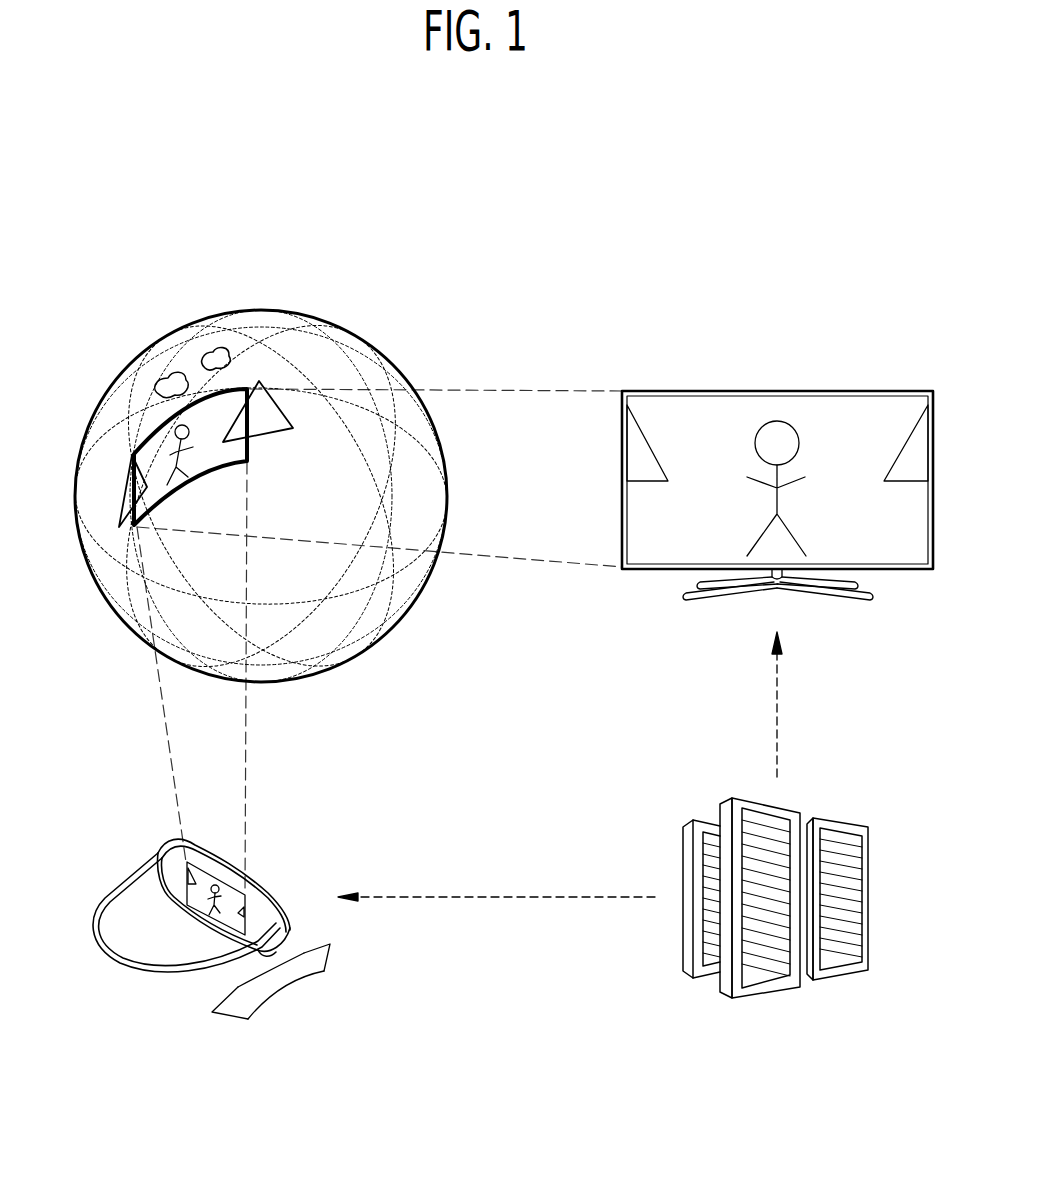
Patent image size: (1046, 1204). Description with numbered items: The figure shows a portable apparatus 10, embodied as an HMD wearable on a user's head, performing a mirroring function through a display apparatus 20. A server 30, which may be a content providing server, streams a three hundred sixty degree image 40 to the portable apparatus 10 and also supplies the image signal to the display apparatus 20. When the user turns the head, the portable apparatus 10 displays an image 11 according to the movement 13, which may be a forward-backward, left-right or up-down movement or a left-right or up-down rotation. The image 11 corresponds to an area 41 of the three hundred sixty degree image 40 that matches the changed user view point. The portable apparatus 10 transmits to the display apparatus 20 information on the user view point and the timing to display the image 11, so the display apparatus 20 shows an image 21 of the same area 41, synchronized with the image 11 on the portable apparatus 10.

The portable apparatus 10 is at (122, 882).
The image 11 is at (240, 888).
The movement 13 is at (278, 993).
The display apparatus 20 is at (760, 391).
The image 21 is at (851, 428).
The server 30 is at (822, 812).
The 360 degree image 40 is at (261, 309).
The area 41 is at (155, 428).